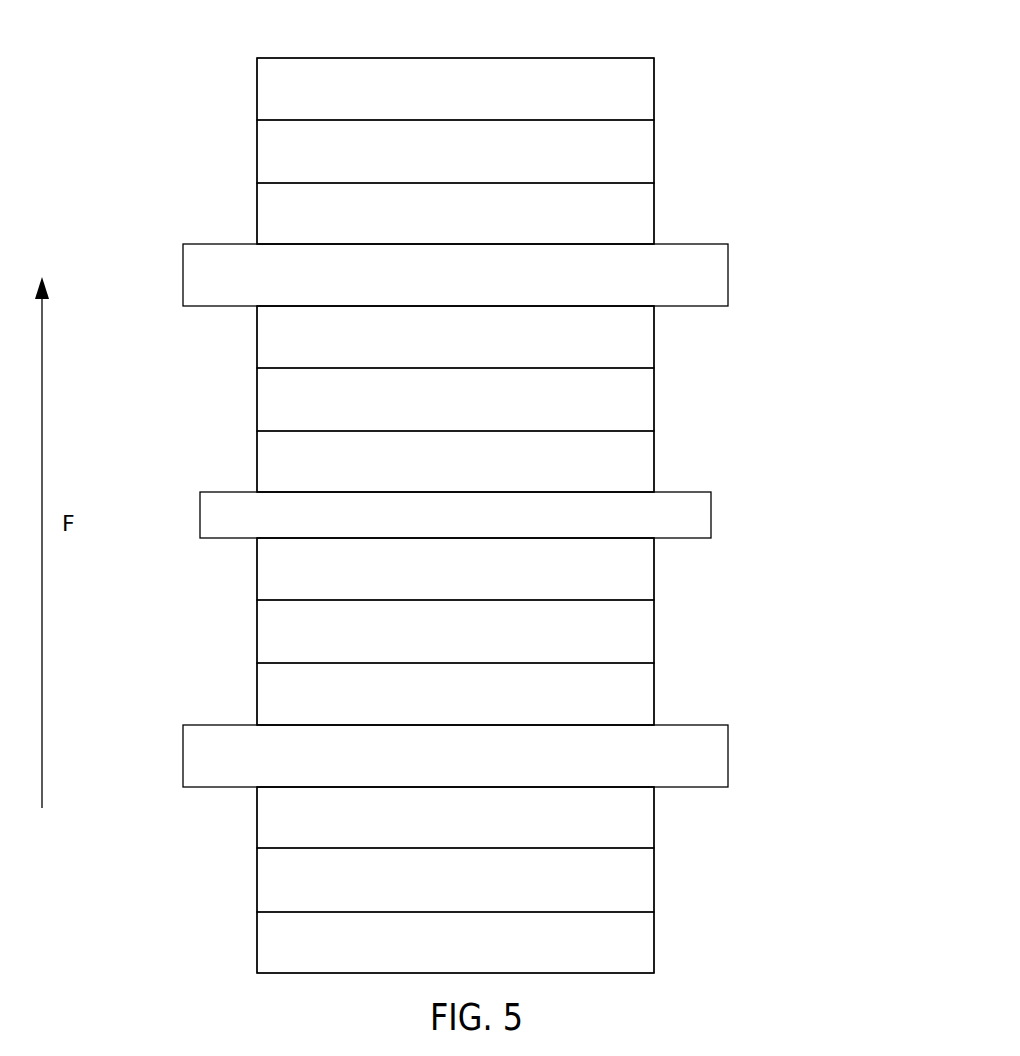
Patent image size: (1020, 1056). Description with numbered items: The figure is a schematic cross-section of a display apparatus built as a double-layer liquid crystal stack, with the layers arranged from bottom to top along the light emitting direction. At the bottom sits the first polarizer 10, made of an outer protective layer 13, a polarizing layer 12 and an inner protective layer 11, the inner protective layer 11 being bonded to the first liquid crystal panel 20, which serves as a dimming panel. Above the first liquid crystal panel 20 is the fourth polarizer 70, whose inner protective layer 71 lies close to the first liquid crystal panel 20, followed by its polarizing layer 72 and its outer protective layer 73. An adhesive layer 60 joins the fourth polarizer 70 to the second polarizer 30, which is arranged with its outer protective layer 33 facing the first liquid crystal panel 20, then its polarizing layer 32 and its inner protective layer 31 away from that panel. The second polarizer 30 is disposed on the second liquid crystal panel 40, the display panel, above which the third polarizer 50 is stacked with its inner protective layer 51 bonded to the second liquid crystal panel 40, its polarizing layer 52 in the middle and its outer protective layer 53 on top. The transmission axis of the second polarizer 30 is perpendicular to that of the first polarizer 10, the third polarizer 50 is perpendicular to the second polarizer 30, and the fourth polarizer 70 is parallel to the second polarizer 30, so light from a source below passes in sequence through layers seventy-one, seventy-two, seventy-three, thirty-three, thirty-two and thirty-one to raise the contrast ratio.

The first polarizer 10 is at (802, 772).
The inner protective layer of the first polarizer 11 is at (642, 838).
The polarizing layer of the first polarizer 12 is at (642, 905).
The outer protective layer of the first polarizer 13 is at (642, 958).
The first liquid crystal panel 20 is at (208, 754).
The second polarizer 30 is at (802, 297).
The inner protective layer of the second polarizer 31 is at (642, 364).
The polarizing layer of the second polarizer 32 is at (642, 430).
The outer protective layer of the second polarizer 33 is at (642, 483).
The second liquid crystal panel 40 is at (208, 269).
The third polarizer 50 is at (802, 25).
The inner protective layer of the third polarizer 51 is at (633, 212).
The polarizing layer of the third polarizer 52 is at (633, 157).
The outer protective layer of the third polarizer 53 is at (633, 92).
The adhesive layer 60 is at (225, 515).
The fourth polarizer 70 is at (802, 518).
The inner protective layer of the fourth polarizer 71 is at (642, 705).
The polarizing layer of the fourth polarizer 72 is at (642, 650).
The outer protective layer of the fourth polarizer 73 is at (642, 585).